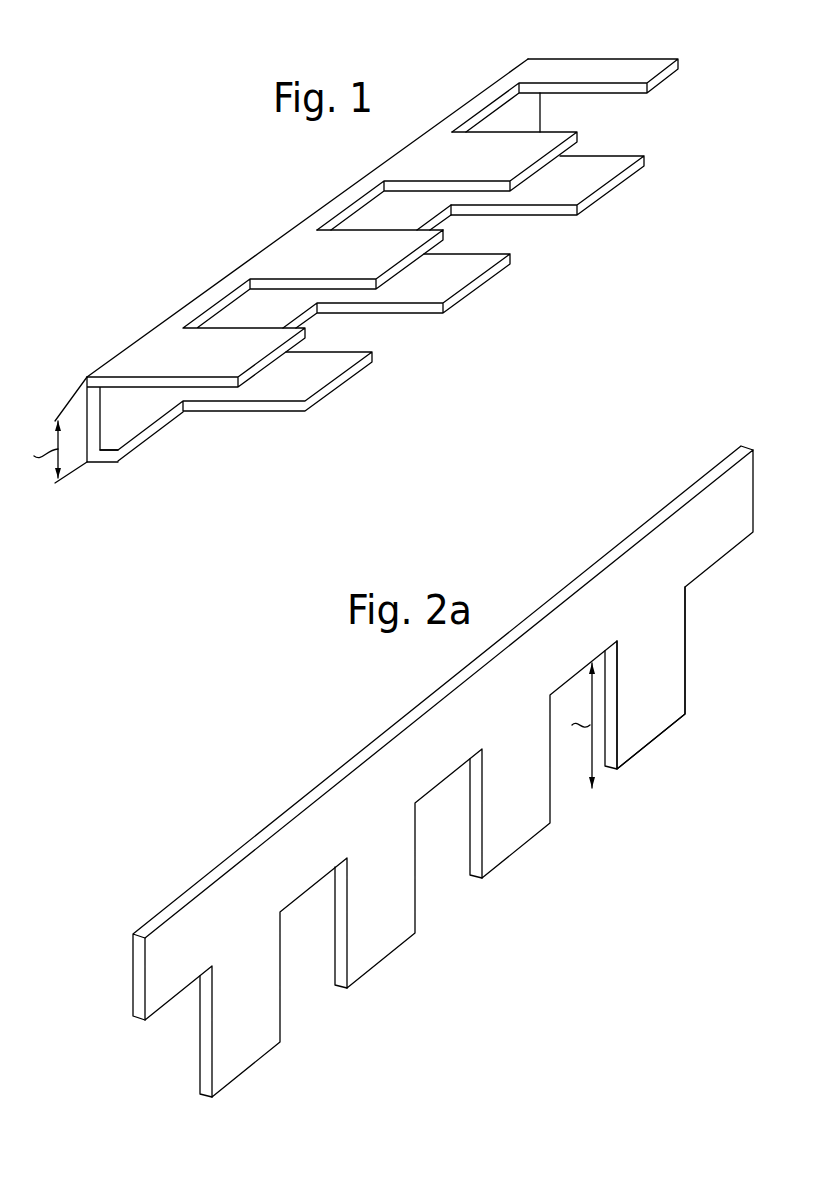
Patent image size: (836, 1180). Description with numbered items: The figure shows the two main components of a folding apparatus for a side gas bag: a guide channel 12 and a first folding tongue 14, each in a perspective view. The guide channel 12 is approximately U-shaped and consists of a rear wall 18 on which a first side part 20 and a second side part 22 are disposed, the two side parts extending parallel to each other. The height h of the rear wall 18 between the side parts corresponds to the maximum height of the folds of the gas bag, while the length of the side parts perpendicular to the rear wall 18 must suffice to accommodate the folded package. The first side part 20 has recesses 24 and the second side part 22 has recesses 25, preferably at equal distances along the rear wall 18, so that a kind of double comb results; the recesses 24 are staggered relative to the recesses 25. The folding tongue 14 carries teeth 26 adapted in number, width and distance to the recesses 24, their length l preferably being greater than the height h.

In FIG. 1, the guide channel 12 is at (467, 86).
In FIG. 2A, the first folding tongue 14 is at (622, 526).
In FIG. 1, the rear wall 18 is at (115, 417).
In FIG. 1, the first side part 20 is at (318, 251).
In FIG. 1, the second side part 22 is at (592, 176).
In FIG. 1, the recesses 24 is at (580, 114).
In FIG. 1, the recesses 25 is at (517, 236).
In FIG. 2A, the teeth 26 is at (645, 718).